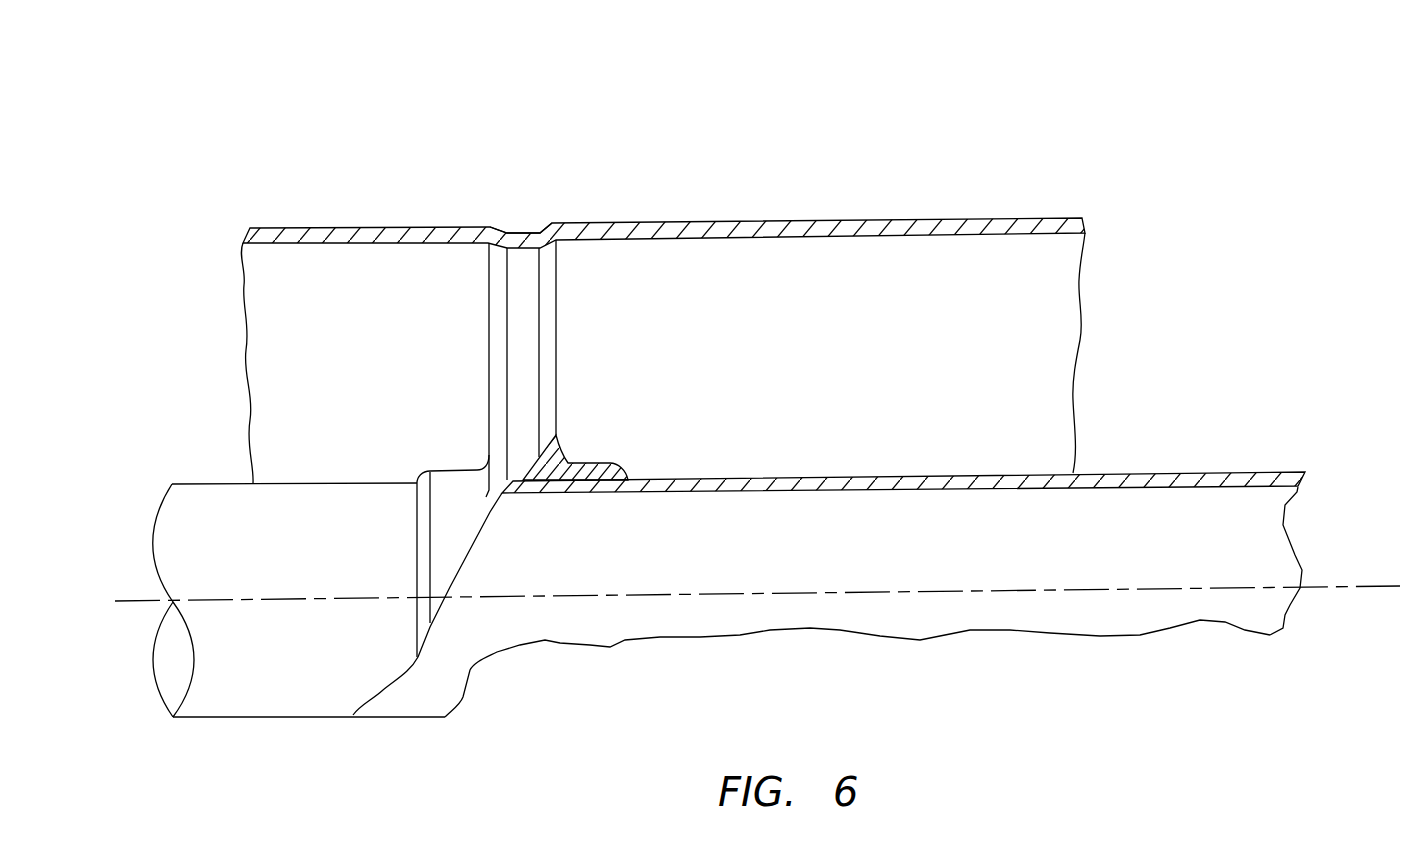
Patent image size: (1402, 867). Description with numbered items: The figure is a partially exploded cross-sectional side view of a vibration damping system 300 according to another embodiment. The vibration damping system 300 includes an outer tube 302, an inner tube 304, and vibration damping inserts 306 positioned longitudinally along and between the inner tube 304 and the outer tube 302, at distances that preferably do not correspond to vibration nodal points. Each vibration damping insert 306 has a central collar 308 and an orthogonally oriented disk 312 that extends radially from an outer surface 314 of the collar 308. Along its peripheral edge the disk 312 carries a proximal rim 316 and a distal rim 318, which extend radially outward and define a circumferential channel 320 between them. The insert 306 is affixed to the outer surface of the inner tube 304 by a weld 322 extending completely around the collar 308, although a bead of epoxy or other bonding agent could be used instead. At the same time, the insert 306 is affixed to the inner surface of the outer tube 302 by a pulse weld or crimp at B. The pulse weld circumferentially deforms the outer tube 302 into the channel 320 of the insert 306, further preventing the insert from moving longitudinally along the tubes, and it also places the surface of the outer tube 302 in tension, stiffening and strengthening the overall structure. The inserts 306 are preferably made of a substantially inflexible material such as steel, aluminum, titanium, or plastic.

The vibration damping system 300 is at (700, 137).
The outer tube 302 is at (889, 222).
The inner tube 304 is at (1118, 473).
The vibration damping insert 306 is at (578, 353).
The central collar 308 is at (444, 478).
The disk 312 is at (561, 302).
The outer surface of collar 314 is at (462, 460).
The proximal rim 316 is at (558, 391).
The distal rim 318 is at (488, 297).
The circumferential channel 320 is at (537, 250).
The weld 322 is at (423, 473).
The pulse weld or crimp B is at (516, 205).